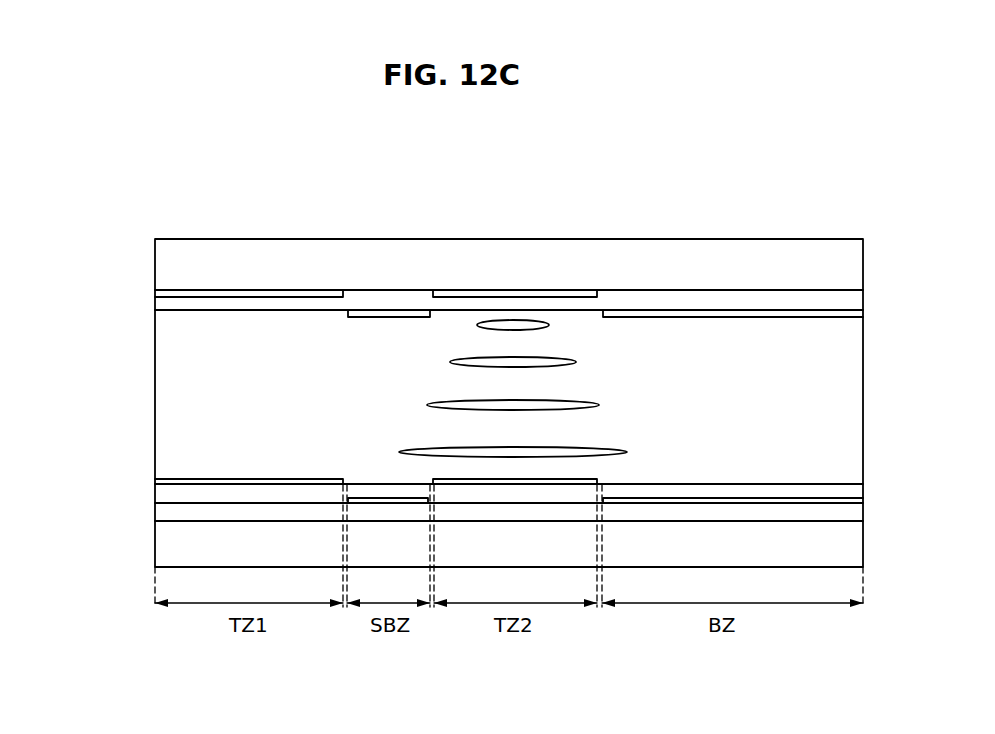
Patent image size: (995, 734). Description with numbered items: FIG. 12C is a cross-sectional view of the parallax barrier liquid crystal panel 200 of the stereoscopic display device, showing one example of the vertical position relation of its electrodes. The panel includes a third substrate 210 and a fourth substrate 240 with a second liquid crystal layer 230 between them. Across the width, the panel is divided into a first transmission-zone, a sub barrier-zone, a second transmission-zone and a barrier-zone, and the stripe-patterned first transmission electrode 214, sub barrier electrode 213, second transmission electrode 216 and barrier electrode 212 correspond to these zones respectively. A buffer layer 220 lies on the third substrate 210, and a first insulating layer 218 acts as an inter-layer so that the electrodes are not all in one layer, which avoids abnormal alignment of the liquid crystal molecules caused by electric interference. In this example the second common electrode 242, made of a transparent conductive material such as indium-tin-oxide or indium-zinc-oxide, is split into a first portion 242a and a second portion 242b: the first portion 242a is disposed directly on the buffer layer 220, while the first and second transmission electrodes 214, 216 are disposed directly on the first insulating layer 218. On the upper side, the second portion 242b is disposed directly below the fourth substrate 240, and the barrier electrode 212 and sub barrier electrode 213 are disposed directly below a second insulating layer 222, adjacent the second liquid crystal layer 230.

The parallax barrier liquid crystal panel 200 is at (758, 212).
The third substrate 210 is at (160, 548).
The barrier electrode 212 is at (783, 317).
The sub barrier electrode 213 is at (358, 317).
The first transmission electrode 214 is at (228, 479).
The second transmission electrode 216 is at (447, 479).
The first insulating layer 218 is at (160, 492).
The buffer layer 220 is at (160, 512).
The second insulating layer 222 is at (162, 300).
The second liquid crystal layer 230 is at (165, 373).
The fourth substrate 240 is at (165, 262).
The second common electrode 242 is at (660, 363).
The first portion 242a is at (355, 498).
The second portion 242b is at (240, 297).